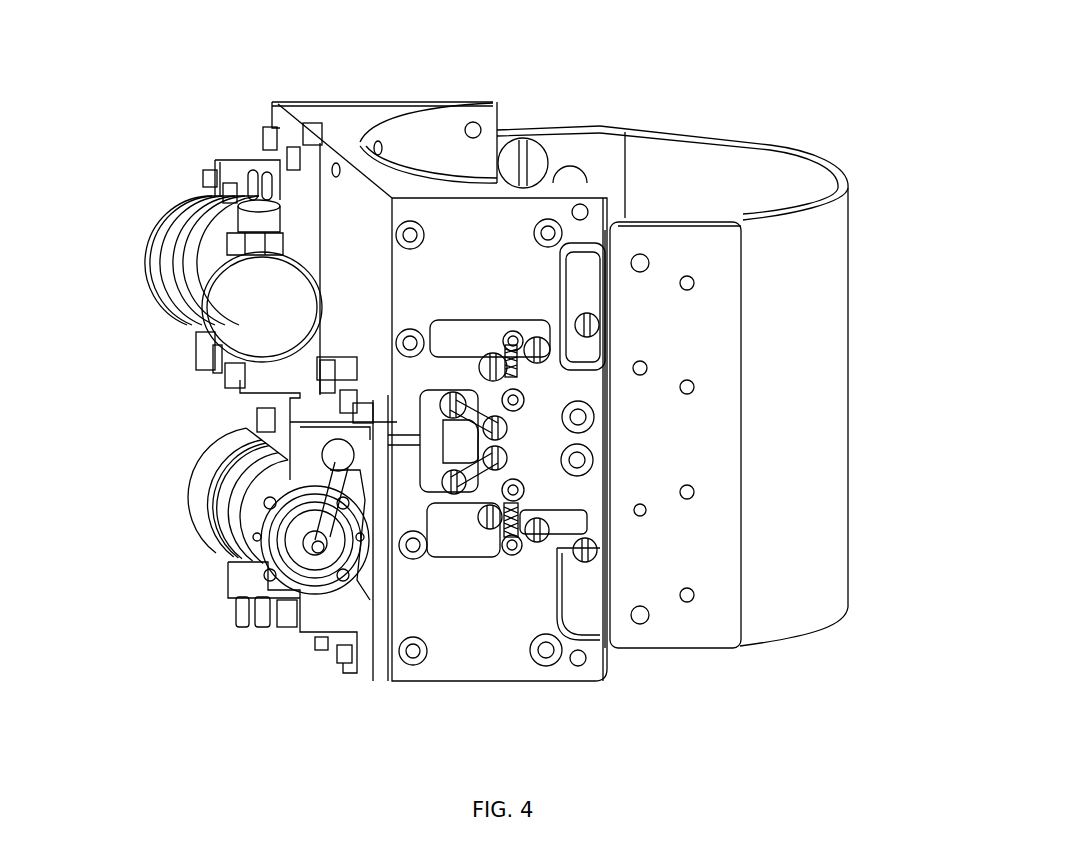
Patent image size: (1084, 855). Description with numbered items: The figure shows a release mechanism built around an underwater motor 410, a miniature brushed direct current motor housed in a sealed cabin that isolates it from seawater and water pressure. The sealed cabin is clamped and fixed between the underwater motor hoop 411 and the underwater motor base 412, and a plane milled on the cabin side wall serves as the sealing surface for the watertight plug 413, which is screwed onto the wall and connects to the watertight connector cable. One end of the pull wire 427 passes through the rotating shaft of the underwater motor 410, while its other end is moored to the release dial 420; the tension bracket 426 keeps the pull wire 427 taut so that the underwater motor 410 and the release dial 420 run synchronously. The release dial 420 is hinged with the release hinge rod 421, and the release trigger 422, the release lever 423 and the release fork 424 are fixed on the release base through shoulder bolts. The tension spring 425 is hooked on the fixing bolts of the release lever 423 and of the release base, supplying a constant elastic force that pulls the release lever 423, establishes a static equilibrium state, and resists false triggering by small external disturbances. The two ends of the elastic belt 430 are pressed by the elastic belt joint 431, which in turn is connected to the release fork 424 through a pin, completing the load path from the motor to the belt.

The underwater motor 410 is at (227, 448).
The underwater motor hoop 411 is at (207, 493).
The underwater motor base 412 is at (228, 578).
The watertight plug 413 is at (245, 218).
The release dial 420 is at (428, 465).
The release hinge rod 421 is at (533, 527).
The release trigger 422 is at (445, 368).
The release lever 423 is at (490, 335).
The release fork 424 is at (596, 258).
The tension spring 425 is at (512, 380).
The tension bracket 426 is at (343, 457).
The pull wire 427 is at (405, 460).
The elastic belt 430 is at (807, 352).
The elastic belt joint 431 is at (708, 488).